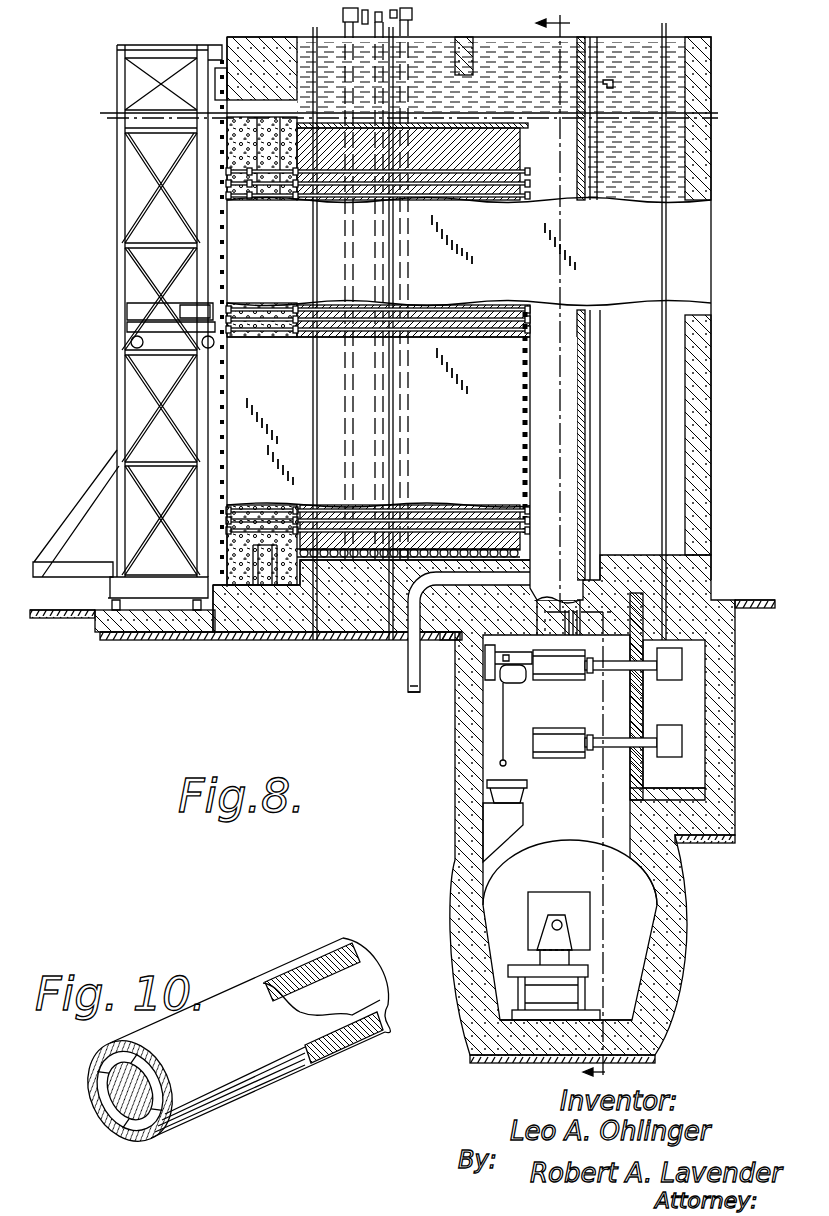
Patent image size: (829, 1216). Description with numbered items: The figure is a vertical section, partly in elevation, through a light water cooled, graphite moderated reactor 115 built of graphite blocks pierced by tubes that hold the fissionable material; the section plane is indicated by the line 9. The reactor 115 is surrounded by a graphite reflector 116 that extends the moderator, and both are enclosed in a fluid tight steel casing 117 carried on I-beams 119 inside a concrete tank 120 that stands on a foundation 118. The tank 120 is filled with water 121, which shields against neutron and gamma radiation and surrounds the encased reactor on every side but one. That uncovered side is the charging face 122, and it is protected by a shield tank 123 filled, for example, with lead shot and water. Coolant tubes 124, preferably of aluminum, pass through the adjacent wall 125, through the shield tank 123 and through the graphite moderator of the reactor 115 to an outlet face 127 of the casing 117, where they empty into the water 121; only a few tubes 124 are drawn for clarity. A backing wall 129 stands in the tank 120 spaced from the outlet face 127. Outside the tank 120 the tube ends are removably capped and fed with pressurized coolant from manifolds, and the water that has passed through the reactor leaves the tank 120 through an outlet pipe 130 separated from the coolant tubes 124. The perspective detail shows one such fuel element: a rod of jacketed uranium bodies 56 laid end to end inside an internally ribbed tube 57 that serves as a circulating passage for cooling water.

In FIG. 8, the section line 9- 9 is at (580, 547).
In FIG. 8, the reactor 115 is at (680, 267).
In FIG. 8, the graphite reflector 116 is at (565, 134).
In FIG. 8, the steel casing 117 is at (423, 125).
In FIG. 8, the foundation 118 is at (277, 560).
In FIG. 8, the I-beams 119 is at (353, 560).
In FIG. 8, the concrete tank 120 is at (703, 460).
In FIG. 8, the water 121 is at (713, 178).
In FIG. 8, the charging face 122 is at (210, 237).
In FIG. 8, the shield tank 123 is at (262, 560).
In FIG. 8, the coolant tubes 124 is at (283, 202).
In FIG. 8, the wall 125 is at (253, 560).
In FIG. 8, the outlet face 127 is at (527, 402).
In FIG. 8, the backing wall 129 is at (583, 485).
In FIG. 8, the outlet pipe 130 is at (408, 672).
In FIG. 10, the jacketed bodies 56 is at (388, 975).
In FIG. 10, the tube 57 is at (95, 1084).